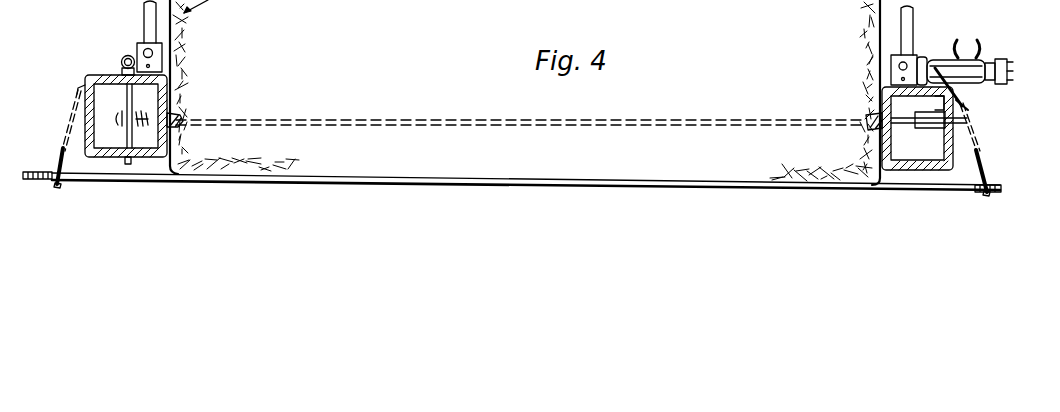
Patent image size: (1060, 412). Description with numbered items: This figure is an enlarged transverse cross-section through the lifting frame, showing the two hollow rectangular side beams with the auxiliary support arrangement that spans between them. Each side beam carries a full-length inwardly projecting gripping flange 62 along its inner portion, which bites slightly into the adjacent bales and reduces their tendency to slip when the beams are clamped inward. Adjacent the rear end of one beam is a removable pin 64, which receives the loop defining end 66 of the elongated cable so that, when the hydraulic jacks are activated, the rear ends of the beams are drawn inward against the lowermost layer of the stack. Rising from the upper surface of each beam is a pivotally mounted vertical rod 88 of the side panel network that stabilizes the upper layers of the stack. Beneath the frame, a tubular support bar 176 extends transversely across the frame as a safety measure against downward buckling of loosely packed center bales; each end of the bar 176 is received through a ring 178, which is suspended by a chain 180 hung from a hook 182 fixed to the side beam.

The gripping flange 62 is at (176, 119).
The removable pin 64 is at (127, 97).
The loop defining end 66 is at (122, 118).
The vertical rod 88 is at (912, 28).
The tubular support bar 176 is at (548, 184).
The ring 178 is at (58, 188).
The chain 180 is at (980, 142).
The hook 182 is at (966, 107).